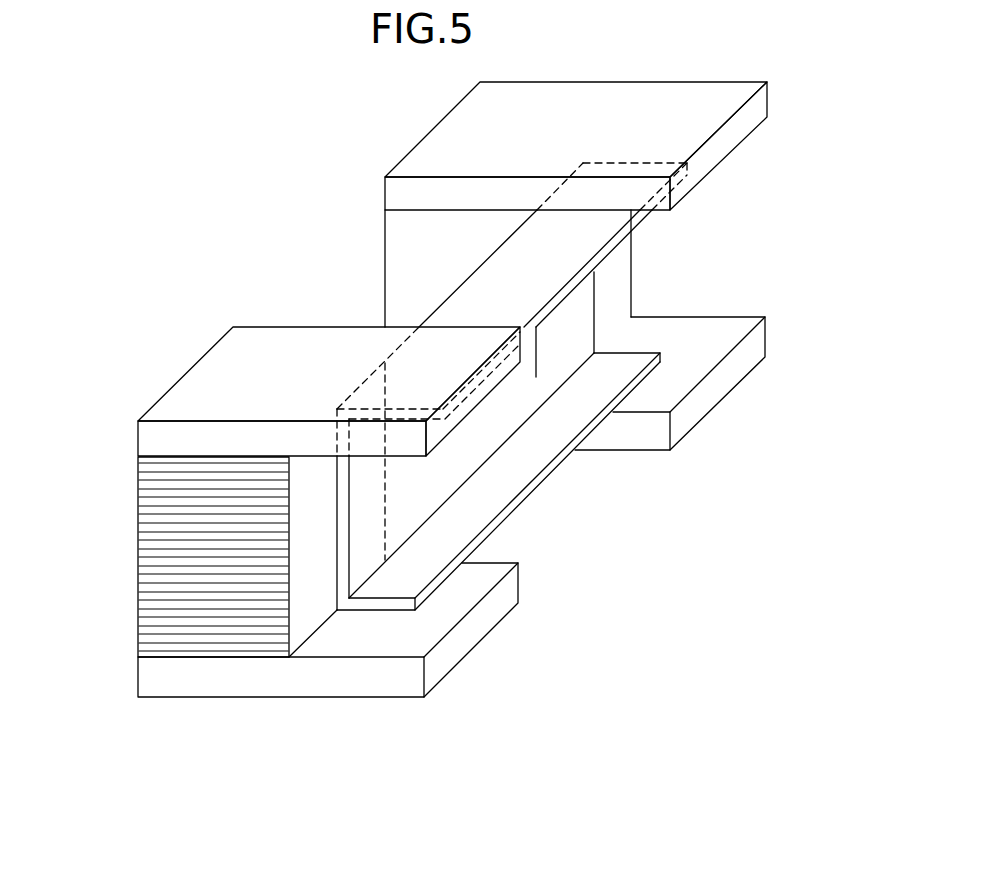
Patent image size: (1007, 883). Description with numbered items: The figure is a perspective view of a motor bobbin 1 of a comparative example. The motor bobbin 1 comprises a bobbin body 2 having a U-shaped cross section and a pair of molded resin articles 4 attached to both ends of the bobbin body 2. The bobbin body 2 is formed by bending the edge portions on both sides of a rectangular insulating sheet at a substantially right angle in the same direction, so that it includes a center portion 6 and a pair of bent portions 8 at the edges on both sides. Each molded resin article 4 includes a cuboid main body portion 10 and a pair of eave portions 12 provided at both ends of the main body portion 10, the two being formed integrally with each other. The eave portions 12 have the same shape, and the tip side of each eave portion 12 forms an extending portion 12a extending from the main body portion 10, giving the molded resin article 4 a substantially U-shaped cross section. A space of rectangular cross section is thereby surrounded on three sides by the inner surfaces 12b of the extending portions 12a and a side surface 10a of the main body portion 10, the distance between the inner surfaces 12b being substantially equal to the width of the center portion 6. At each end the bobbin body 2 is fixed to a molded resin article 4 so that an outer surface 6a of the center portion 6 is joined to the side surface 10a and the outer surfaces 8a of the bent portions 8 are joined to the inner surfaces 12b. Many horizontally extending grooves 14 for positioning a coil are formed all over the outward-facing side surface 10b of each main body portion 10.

The motor bobbin 1 is at (174, 200).
The bobbin body 2 is at (525, 477).
The molded resin article 4 is at (200, 387).
The center portion 6 is at (570, 328).
The outer surface of the center portion 6a is at (357, 498).
The bent portion 8 is at (482, 520).
The outer surface of the bent portion 8a is at (475, 295).
The main body portion 10 is at (148, 535).
The side surface of the main body portion 10a is at (307, 602).
The outward-facing side surface of the main body portion 10b is at (148, 588).
The eave portion 12 is at (168, 677).
The extending portion 12a is at (398, 675).
The inner surface of the extending portion 12b is at (440, 612).
The groove 14 is at (148, 637).